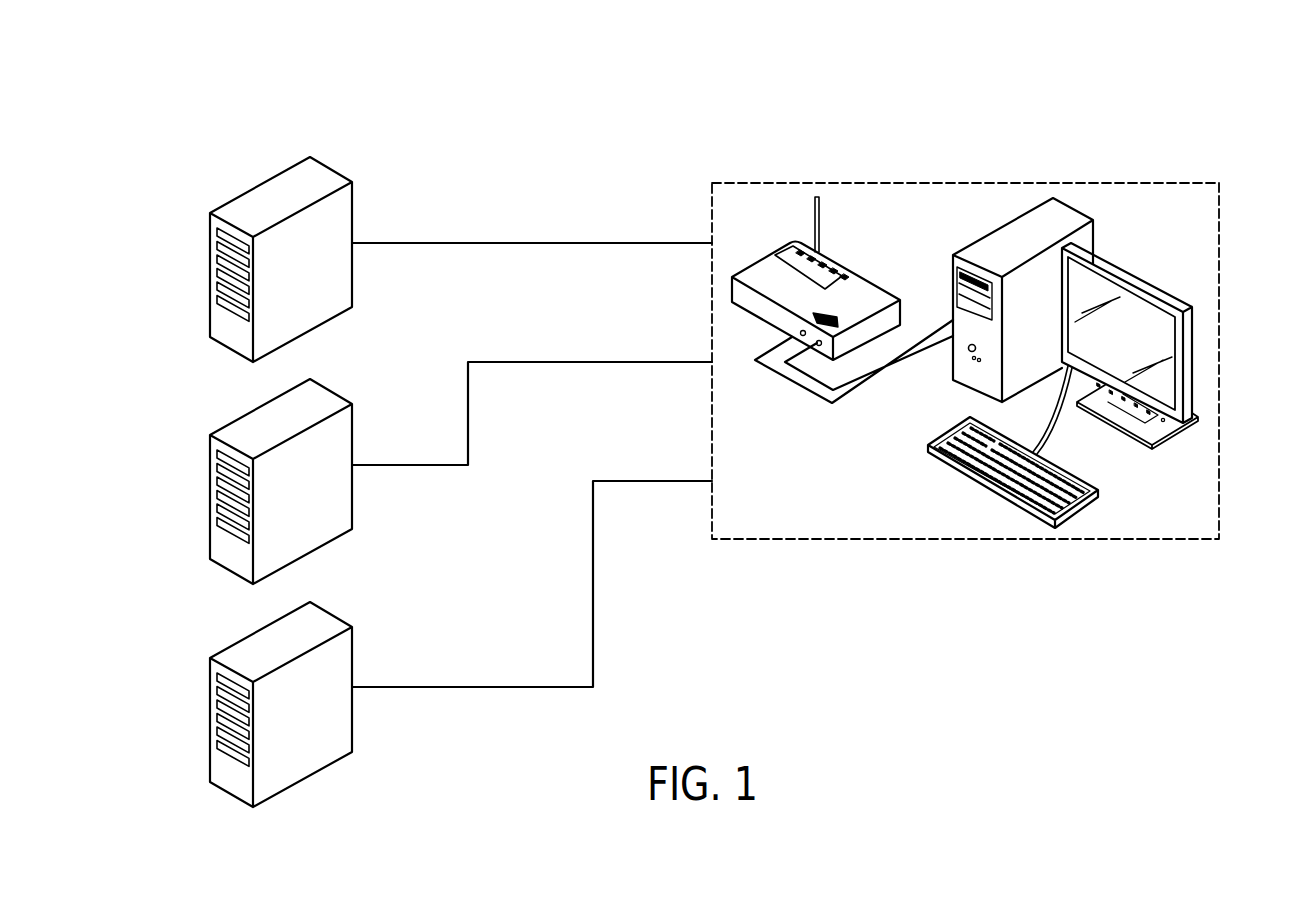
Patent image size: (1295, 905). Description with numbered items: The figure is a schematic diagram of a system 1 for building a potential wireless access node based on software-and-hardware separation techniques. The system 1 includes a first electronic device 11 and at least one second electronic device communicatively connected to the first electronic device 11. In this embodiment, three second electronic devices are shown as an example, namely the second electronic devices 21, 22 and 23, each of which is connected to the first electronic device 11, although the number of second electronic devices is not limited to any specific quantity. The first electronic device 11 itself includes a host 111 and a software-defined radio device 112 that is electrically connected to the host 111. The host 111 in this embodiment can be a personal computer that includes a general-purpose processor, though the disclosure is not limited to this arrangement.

The system 1 is at (176, 110).
The first electronic device 11 is at (1219, 243).
The host 111 is at (996, 216).
The software-defined radio device 112 is at (866, 290).
The second electronic device 21 is at (322, 175).
The second electronic device 22 is at (322, 397).
The second electronic device 23 is at (322, 620).